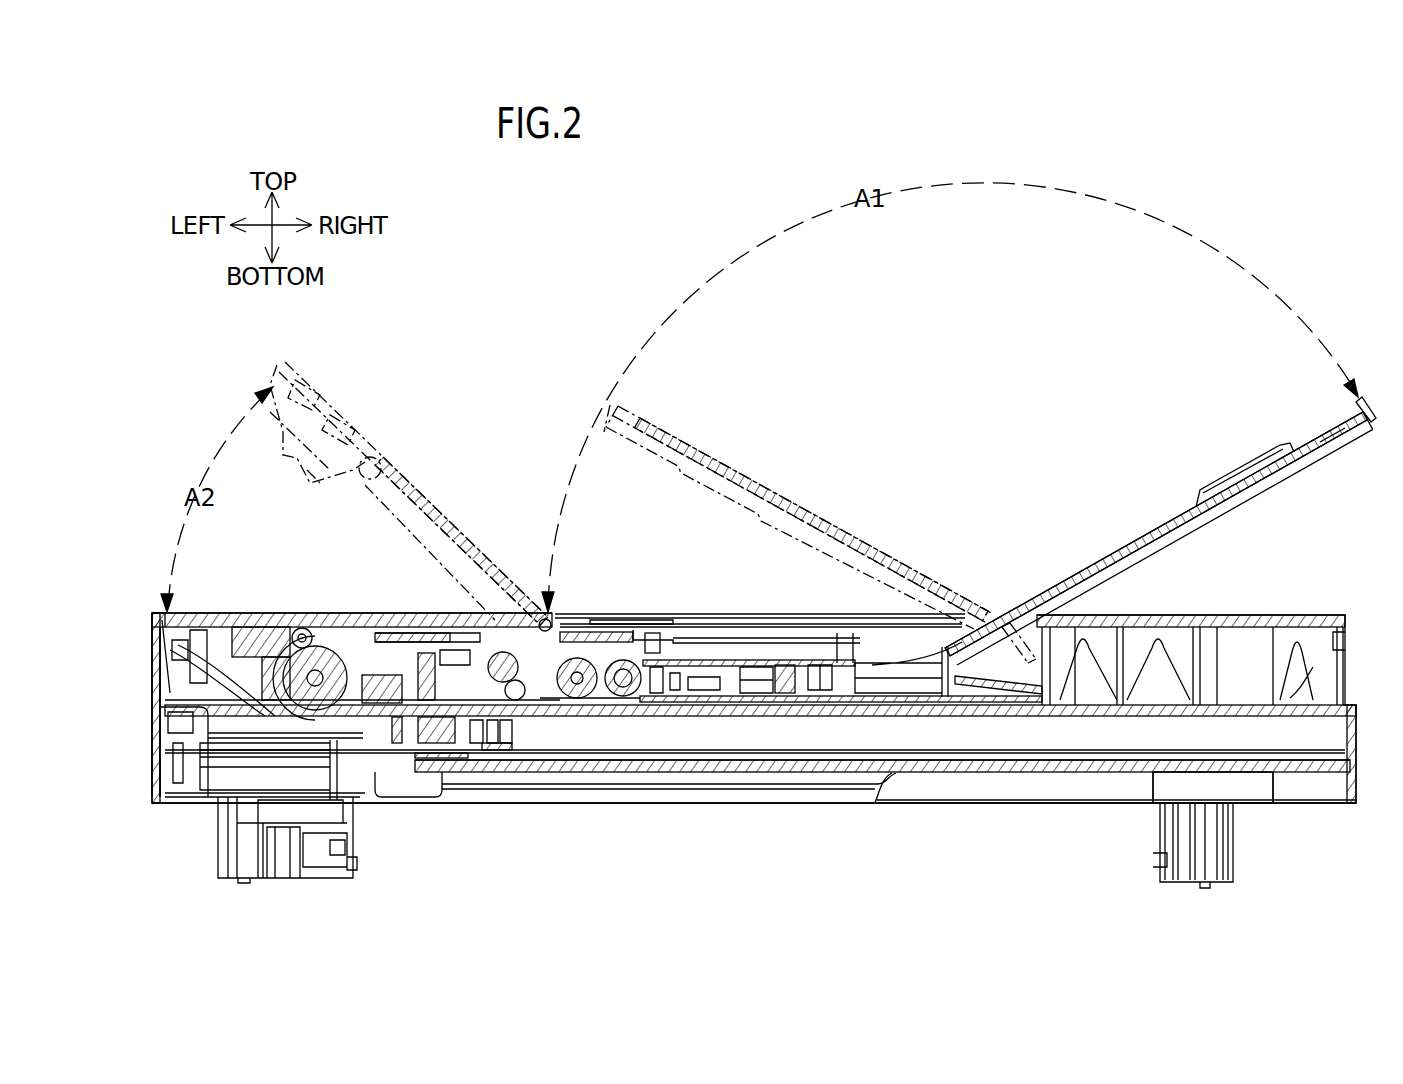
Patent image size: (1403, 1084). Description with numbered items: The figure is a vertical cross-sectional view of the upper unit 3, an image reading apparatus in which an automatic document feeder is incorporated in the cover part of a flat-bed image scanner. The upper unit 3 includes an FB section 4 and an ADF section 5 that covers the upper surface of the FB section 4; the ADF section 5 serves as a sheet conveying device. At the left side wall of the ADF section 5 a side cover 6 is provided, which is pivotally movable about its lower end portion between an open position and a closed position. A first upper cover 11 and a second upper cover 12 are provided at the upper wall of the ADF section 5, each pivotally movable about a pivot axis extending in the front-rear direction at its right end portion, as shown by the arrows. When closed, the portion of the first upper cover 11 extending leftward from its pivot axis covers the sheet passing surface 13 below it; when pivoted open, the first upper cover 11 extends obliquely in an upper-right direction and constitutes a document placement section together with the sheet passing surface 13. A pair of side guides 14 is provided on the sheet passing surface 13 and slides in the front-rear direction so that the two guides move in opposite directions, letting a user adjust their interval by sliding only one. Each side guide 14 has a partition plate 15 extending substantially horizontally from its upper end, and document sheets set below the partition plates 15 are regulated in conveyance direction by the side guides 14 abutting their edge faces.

The upper unit 3 is at (555, 846).
The FB section 4 is at (1258, 793).
The ADF section 5 is at (1259, 617).
The side cover 6 is at (158, 672).
The first upper cover 11 is at (1064, 580).
The second upper cover 12 is at (433, 620).
The sheet passing surface 13 is at (890, 657).
The side guides 14 is at (817, 637).
The partition plate 15 is at (748, 630).